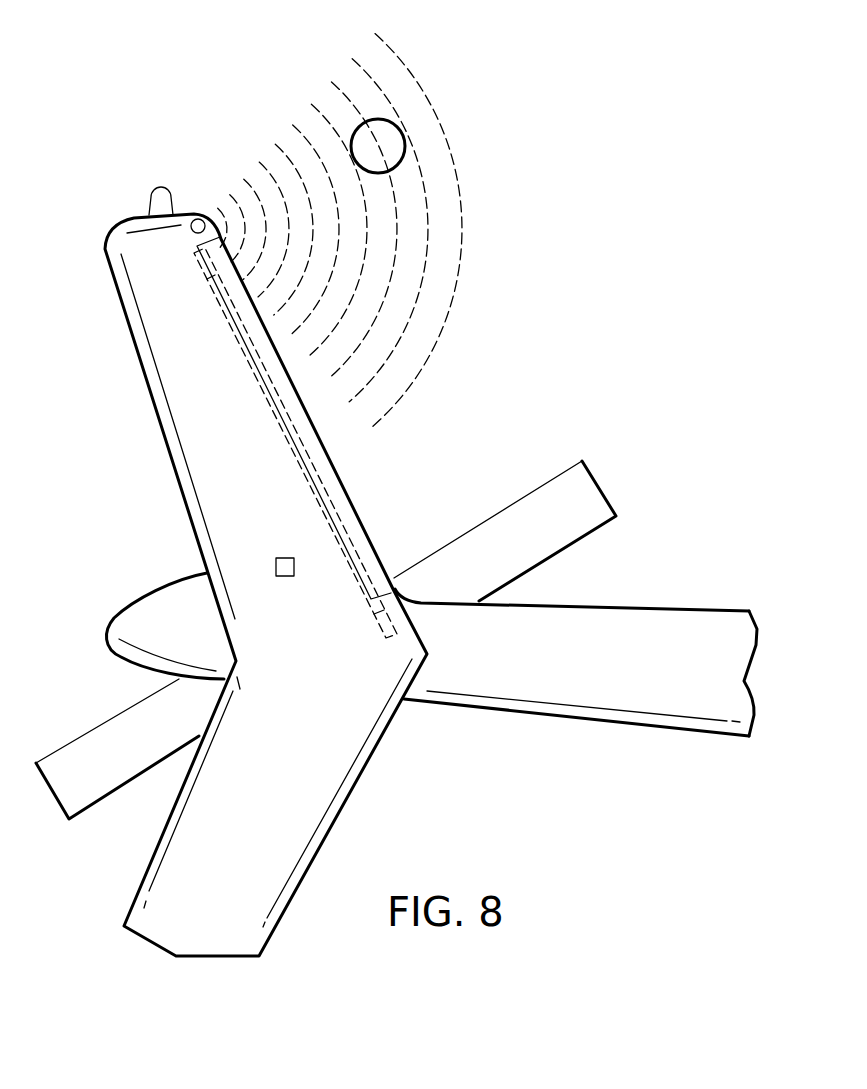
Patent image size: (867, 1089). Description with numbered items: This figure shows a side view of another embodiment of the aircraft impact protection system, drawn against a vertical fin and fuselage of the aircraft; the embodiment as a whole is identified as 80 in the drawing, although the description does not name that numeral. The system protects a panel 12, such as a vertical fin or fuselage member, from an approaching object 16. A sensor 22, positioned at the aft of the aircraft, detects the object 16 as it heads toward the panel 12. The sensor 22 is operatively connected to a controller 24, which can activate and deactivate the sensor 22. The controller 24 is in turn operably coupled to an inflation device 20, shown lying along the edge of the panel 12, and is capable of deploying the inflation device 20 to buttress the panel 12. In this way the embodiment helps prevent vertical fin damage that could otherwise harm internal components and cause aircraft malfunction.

The mobile device 80 is at (118, 298).
The panel 12 is at (339, 472).
The inflation device 20 is at (270, 435).
The sensor 22 is at (198, 217).
The controller 24 is at (287, 577).
The object 16 is at (381, 117).